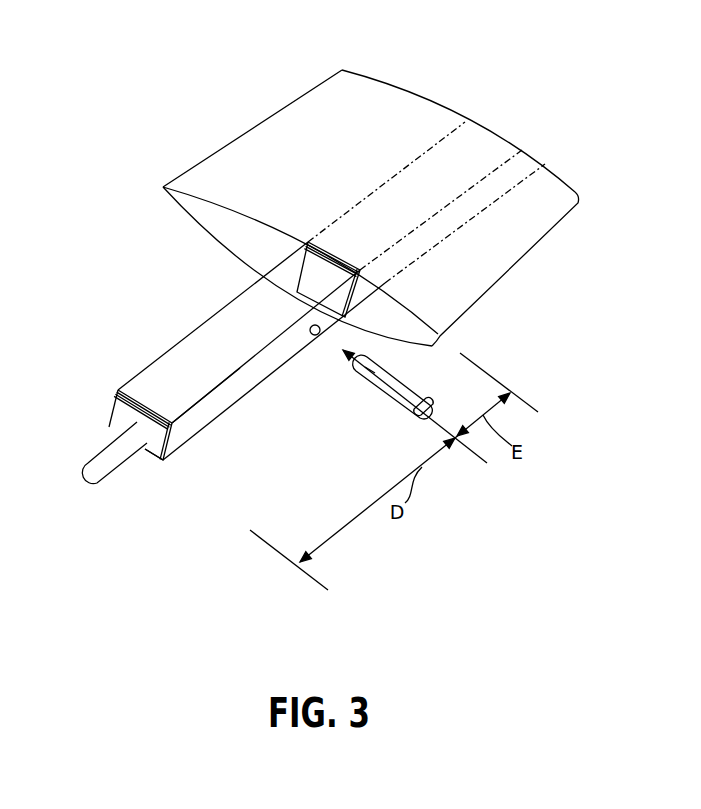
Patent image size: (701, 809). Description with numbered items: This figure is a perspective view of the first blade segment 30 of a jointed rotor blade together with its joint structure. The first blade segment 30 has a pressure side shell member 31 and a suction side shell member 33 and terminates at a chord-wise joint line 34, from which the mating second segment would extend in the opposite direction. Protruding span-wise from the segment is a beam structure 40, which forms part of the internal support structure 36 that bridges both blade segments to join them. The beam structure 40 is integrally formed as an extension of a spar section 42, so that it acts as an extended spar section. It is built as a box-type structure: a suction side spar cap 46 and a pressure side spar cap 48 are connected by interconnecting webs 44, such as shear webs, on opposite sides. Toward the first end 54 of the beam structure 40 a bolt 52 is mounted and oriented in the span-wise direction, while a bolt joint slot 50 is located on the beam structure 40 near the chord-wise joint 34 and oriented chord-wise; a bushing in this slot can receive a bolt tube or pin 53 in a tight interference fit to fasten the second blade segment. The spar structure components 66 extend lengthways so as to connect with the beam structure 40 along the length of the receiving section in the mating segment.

The first blade segment 30 is at (253, 131).
The pressure side shell member 31 is at (398, 104).
The suction side shell member 33 is at (237, 257).
The chord-wise joint line 34 is at (262, 230).
The internal support structure 36 is at (250, 407).
The beam structure 40 is at (180, 363).
The spar section 42 is at (483, 137).
The interconnecting web 44 is at (278, 351).
The suction side spar cap 46 is at (303, 293).
The pressure side spar cap 48 is at (323, 245).
The bolt joint slot 50 is at (314, 336).
The bolt 52 is at (122, 464).
The bolt tube or pin 53 is at (383, 393).
The first end 54 is at (172, 462).
The spar structure components 66 is at (430, 193).